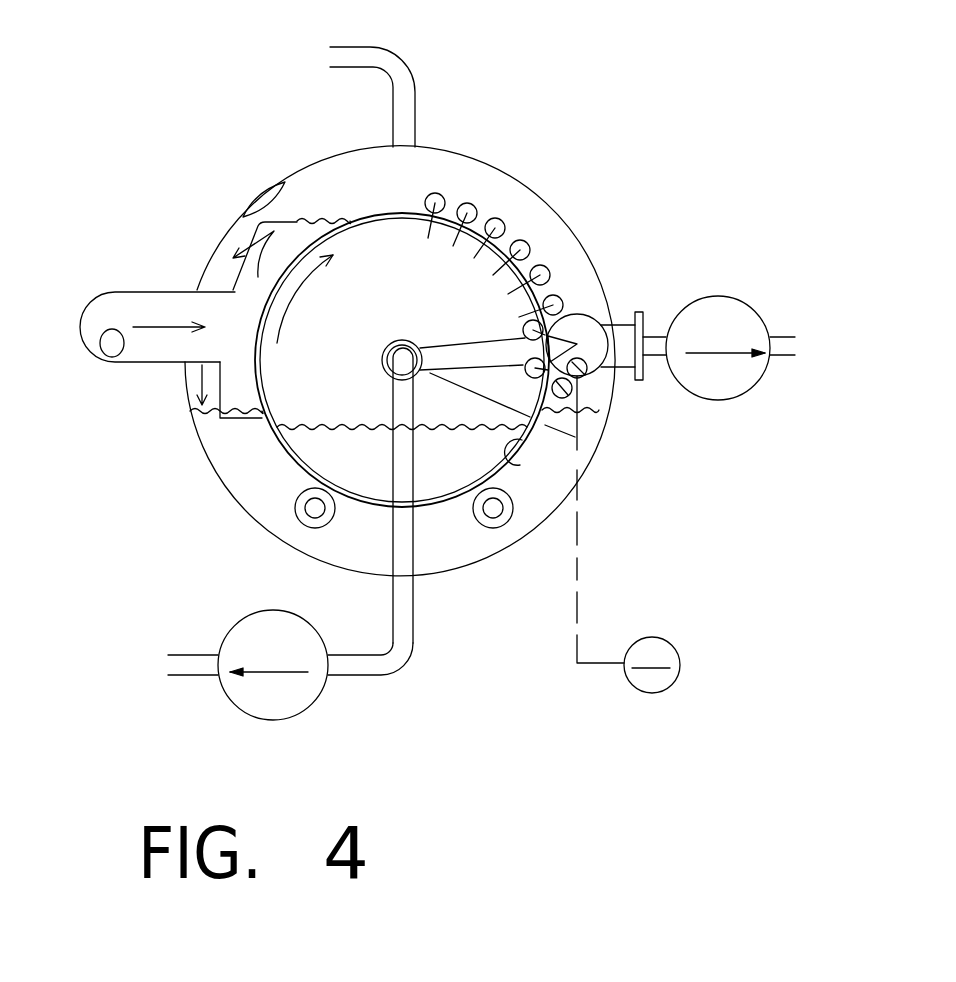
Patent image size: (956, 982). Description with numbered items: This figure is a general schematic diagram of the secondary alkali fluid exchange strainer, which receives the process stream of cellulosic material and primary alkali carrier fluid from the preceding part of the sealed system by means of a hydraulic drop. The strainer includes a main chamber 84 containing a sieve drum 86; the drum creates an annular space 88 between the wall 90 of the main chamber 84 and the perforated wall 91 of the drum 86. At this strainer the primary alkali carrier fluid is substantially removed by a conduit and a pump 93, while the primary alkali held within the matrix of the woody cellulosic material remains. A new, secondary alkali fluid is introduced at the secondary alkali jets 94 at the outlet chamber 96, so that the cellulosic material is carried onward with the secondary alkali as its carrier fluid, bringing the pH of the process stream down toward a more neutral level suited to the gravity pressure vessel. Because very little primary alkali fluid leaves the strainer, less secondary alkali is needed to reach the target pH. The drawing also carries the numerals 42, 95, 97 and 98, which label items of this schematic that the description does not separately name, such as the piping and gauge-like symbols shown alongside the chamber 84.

The supply conduit 42 is at (413, 588).
The main chamber 84 is at (332, 155).
The sieve drum 86 is at (513, 460).
The annular space 88 is at (433, 177).
The wall 90 is at (245, 213).
The perforated wall 91 is at (528, 438).
The pump 93 is at (283, 720).
The secondary alkali jets 94 is at (512, 364).
The nozzle 95 is at (580, 372).
The outlet chamber 96 is at (580, 314).
The pressure gauge 97 is at (632, 683).
The gas pump 98 is at (717, 295).